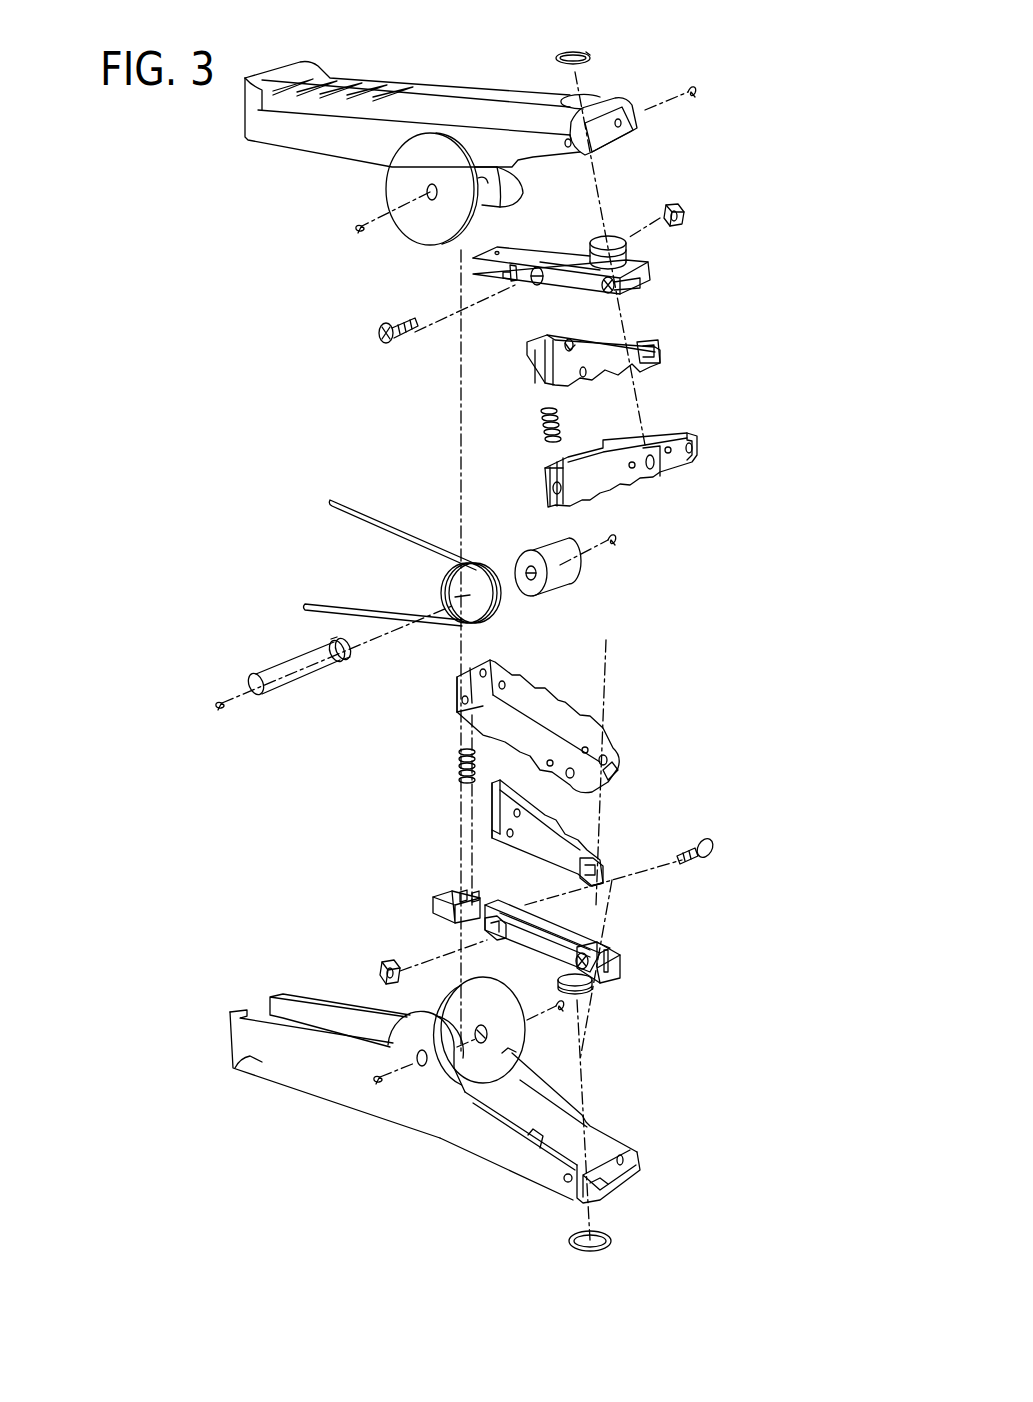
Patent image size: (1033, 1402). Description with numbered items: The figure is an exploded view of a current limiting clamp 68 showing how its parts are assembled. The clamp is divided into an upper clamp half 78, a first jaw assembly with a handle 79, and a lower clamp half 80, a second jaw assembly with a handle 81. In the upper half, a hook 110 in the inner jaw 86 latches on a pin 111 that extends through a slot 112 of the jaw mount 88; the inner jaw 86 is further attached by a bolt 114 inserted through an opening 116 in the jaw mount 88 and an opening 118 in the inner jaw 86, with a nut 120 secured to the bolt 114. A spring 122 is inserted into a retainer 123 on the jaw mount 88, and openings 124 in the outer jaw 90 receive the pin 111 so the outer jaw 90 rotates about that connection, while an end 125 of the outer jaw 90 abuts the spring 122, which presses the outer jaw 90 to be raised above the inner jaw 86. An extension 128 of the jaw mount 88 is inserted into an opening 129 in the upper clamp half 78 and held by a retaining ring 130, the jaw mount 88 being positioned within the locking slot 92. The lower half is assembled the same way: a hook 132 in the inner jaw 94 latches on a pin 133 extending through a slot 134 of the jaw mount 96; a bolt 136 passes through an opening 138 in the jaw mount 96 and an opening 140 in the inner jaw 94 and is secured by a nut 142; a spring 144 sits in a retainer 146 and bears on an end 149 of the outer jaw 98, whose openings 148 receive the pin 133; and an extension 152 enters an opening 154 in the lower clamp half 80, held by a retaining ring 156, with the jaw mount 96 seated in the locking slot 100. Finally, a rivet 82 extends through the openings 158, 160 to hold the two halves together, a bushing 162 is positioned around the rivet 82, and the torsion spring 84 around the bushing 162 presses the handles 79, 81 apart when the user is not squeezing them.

The sense clamp 68 is at (176, 294).
The upper clamp half 78 is at (477, 113).
The handle 79 is at (330, 72).
The lower clamp half 80 is at (487, 1148).
The handle 81 is at (307, 1082).
The rivet 82 is at (297, 677).
The torsion spring 84 is at (350, 607).
The inner jaw 86 is at (607, 365).
The jaw mount 88 is at (583, 272).
The outer jaw 90 is at (622, 478).
The locking slot 92 is at (585, 155).
The inner jaw 94 is at (560, 838).
The jaw mount 96 is at (540, 946).
The outer jaw 98 is at (575, 735).
The locking slot 100 is at (598, 1160).
The hook 110 is at (652, 340).
The pin 111 is at (640, 262).
The slot 112 is at (640, 283).
The bolt 114 is at (380, 334).
The opening 116 is at (537, 286).
The opening 118 is at (572, 342).
The nut 120 is at (690, 214).
The spring 122 is at (543, 433).
The retainer 123 is at (505, 276).
The openings 124 is at (652, 473).
The end 125 is at (558, 470).
The extension 128 is at (610, 240).
The opening 129 is at (586, 96).
The retaining ring 130 is at (590, 53).
The hook 132 is at (592, 860).
The pin 133 is at (595, 948).
The slot 134 is at (615, 963).
The bolt 136 is at (695, 864).
The opening 138 is at (490, 920).
The opening 140 is at (500, 833).
The nut 142 is at (380, 975).
The spring 144 is at (455, 765).
The retainer 146 is at (470, 895).
The openings 148 is at (603, 790).
The end 149 is at (453, 703).
The extension 152 is at (590, 990).
The opening 154 is at (605, 1172).
The retaining ring 156 is at (625, 1245).
The opening 158 is at (470, 165).
The opening 160 is at (482, 1045).
The bushing 162 is at (560, 592).